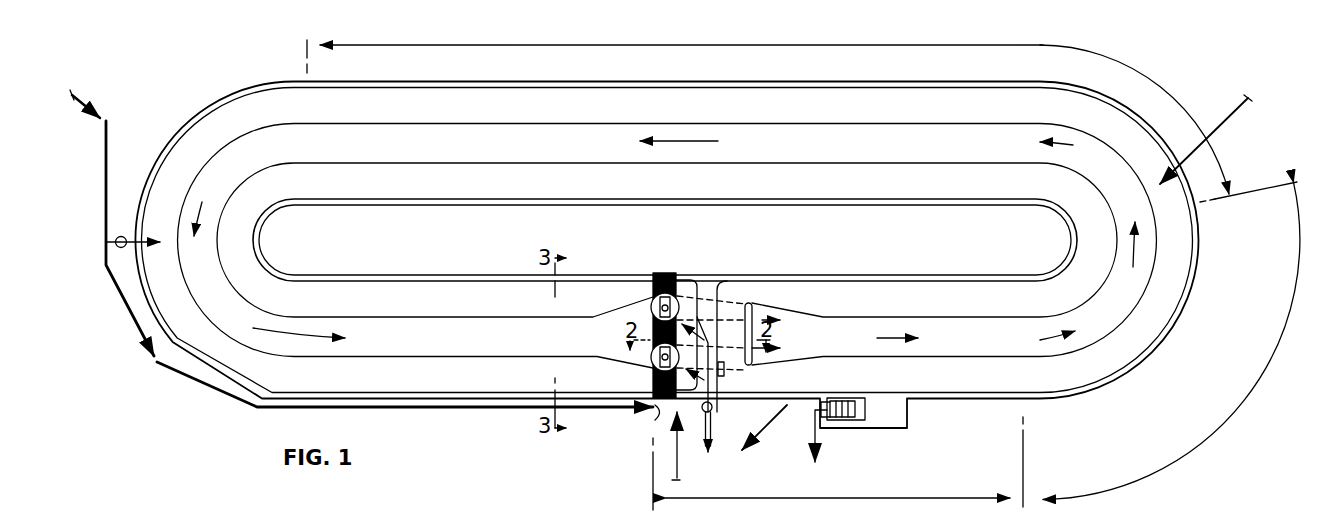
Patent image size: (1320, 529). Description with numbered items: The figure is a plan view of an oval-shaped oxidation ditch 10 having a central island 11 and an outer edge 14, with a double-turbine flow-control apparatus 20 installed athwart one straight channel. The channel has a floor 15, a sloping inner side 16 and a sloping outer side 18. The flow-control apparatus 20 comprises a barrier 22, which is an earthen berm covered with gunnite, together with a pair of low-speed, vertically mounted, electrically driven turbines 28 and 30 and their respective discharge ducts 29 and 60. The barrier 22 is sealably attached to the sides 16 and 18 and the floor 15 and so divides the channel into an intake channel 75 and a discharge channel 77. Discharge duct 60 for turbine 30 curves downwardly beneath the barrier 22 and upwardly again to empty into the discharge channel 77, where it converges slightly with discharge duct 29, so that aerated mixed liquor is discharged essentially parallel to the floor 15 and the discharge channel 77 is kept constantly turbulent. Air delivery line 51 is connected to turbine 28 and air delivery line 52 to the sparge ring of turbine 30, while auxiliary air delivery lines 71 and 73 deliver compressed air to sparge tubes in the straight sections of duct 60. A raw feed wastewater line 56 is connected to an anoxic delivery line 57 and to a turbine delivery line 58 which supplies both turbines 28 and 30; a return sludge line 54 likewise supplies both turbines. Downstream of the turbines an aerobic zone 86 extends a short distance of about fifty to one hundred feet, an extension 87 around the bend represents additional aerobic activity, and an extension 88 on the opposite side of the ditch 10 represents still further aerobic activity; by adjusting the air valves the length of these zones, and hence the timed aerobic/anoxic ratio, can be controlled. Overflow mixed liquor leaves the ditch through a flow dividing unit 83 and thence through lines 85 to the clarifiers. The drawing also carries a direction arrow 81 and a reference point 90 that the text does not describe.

The oxidation ditch 10 is at (1118, 91).
The island 11 is at (986, 249).
The outer edge 14 is at (410, 83).
The floor 15 is at (453, 156).
The sloping inner side 16 is at (425, 193).
The sloping outer side 18 is at (300, 102).
The flow-control apparatus 20 is at (681, 308).
The barrier 22 is at (722, 290).
The turbine 28 is at (652, 300).
The discharge duct 29 is at (750, 303).
The turbine 30 is at (652, 371).
The air delivery line 51 is at (712, 448).
The air delivery line 52 is at (678, 458).
The return sludge line 54 is at (680, 466).
The raw feed line 56 is at (85, 103).
The anoxic delivery line 57 is at (122, 236).
The turbine delivery line 58 is at (658, 410).
The discharge duct 60 is at (753, 364).
The auxiliary air delivery line 71 is at (724, 377).
The auxiliary air delivery line 73 is at (713, 405).
The intake channel 75 is at (595, 344).
The discharge channel 77 is at (836, 346).
The direction arrow 81 is at (1222, 130).
The flow dividing unit 83 is at (862, 418).
The lines 85 is at (815, 445).
The aerobic zone 86 is at (943, 497).
The extension 87 is at (1180, 455).
The extension 88 is at (930, 78).
The reference point 90 is at (1023, 508).